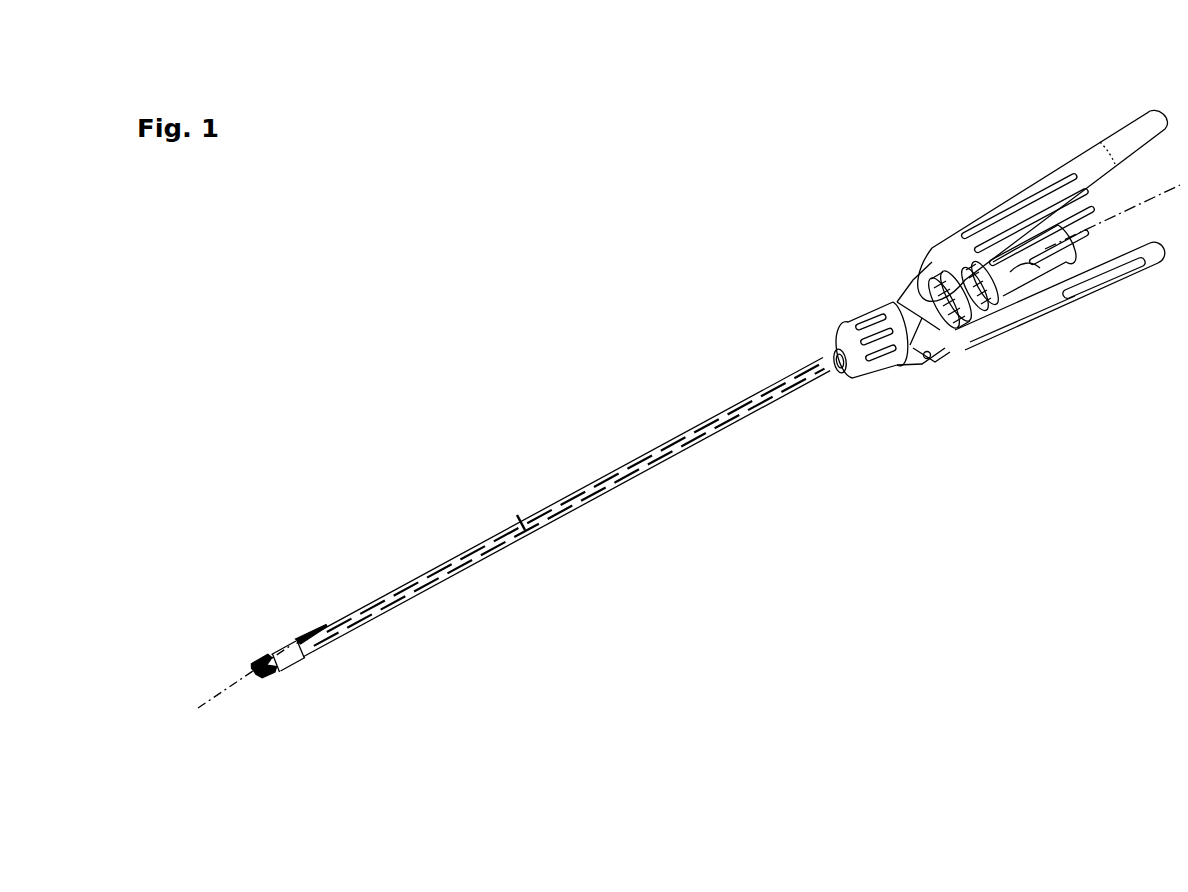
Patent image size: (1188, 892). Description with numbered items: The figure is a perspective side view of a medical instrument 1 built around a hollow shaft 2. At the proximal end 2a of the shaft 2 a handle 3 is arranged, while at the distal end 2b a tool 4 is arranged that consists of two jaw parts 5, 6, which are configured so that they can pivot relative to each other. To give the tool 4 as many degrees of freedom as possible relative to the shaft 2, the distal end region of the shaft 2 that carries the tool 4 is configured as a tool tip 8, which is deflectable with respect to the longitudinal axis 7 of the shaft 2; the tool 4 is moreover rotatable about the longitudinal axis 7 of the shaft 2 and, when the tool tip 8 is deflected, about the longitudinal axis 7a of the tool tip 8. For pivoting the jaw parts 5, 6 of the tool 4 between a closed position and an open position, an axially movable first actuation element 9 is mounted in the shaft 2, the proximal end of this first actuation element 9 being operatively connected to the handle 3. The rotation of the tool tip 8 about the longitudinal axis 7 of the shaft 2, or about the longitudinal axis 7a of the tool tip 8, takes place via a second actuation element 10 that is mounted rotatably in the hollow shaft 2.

The medical instrument 1 is at (590, 314).
The hollow shaft 2 is at (565, 502).
The proximal end 2a is at (829, 377).
The distal end 2b is at (314, 652).
The handle 3 is at (954, 212).
The tool 4 is at (244, 667).
The jaw part 5 is at (258, 657).
The jaw part 6 is at (274, 675).
The longitudinal axis 7 is at (229, 690).
The longitudinal axis 7a is at (244, 677).
The tool tip 8 is at (251, 637).
The first actuation element 9 is at (577, 512).
The second actuation element 10 is at (517, 515).